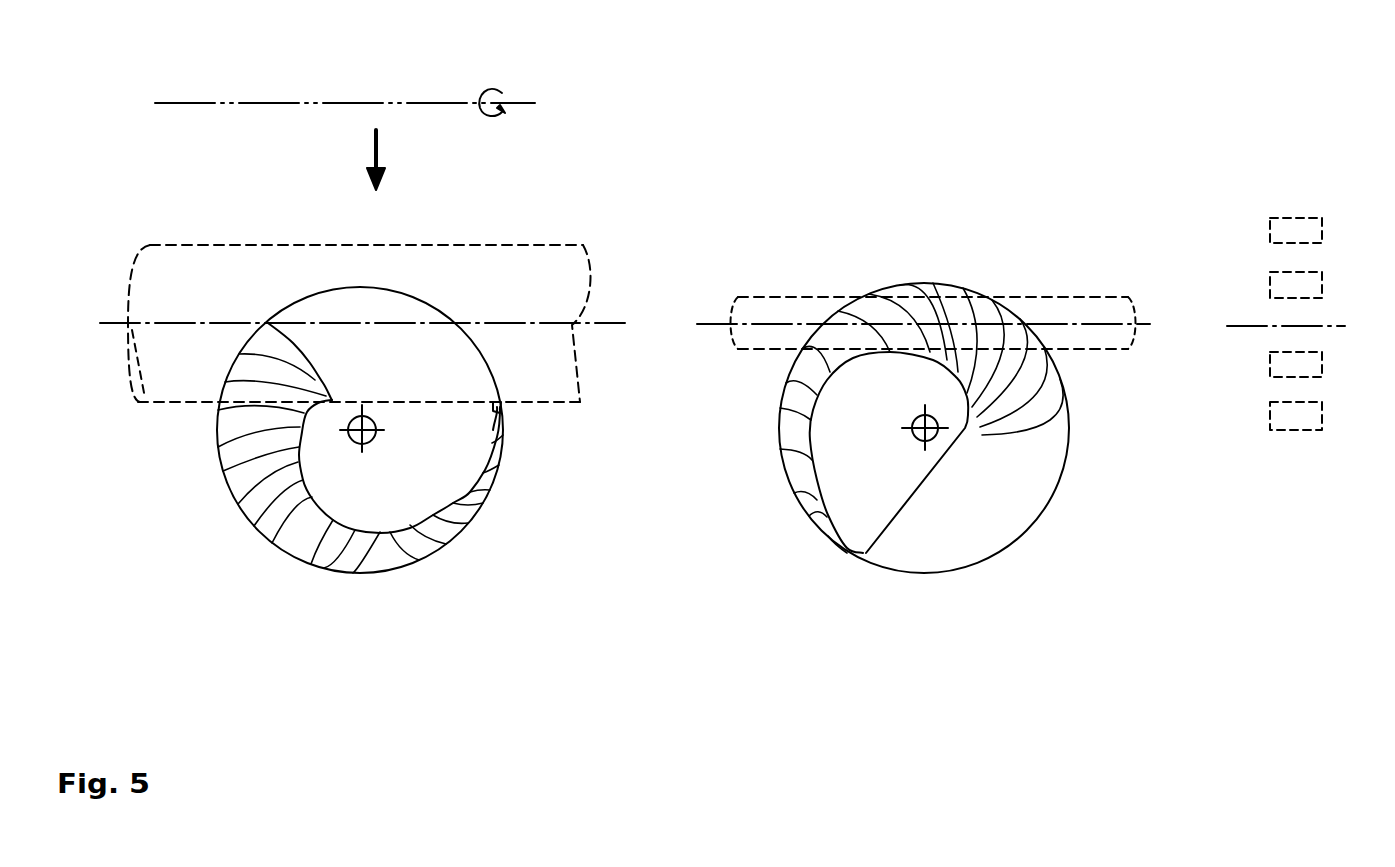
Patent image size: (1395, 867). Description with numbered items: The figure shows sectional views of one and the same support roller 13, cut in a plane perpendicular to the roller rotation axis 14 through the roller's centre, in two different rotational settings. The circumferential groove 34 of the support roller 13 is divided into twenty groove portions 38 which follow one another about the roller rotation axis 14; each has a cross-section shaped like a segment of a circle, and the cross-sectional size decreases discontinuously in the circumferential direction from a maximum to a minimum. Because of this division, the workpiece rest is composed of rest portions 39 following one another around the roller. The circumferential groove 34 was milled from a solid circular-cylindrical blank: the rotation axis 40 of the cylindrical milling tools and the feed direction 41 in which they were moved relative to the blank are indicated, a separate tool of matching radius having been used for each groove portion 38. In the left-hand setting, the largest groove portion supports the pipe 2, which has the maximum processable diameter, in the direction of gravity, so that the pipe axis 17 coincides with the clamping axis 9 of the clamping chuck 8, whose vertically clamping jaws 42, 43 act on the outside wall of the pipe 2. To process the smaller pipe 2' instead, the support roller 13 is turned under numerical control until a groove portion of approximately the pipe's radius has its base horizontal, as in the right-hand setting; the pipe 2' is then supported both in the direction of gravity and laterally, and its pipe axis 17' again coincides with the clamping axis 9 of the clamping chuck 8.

The rotation axis 40 is at (185, 93).
The feed direction 41 is at (372, 150).
The pipe 2 is at (359, 281).
The pipe axis 17 is at (368, 263).
The pipe 2' is at (930, 272).
The pipe axis 17' is at (923, 261).
The support roller 13 is at (577, 424).
The groove portions 38 is at (216, 428).
The roller rotation axis 14 is at (349, 433).
The rest portions 39 is at (311, 508).
The circumferential groove 34 is at (268, 550).
The clamping chuck 8 is at (1315, 296).
The clamping jaws 42 is at (1300, 225).
The clamping axis 9 is at (1252, 324).
The clamping jaws 43 is at (1312, 366).